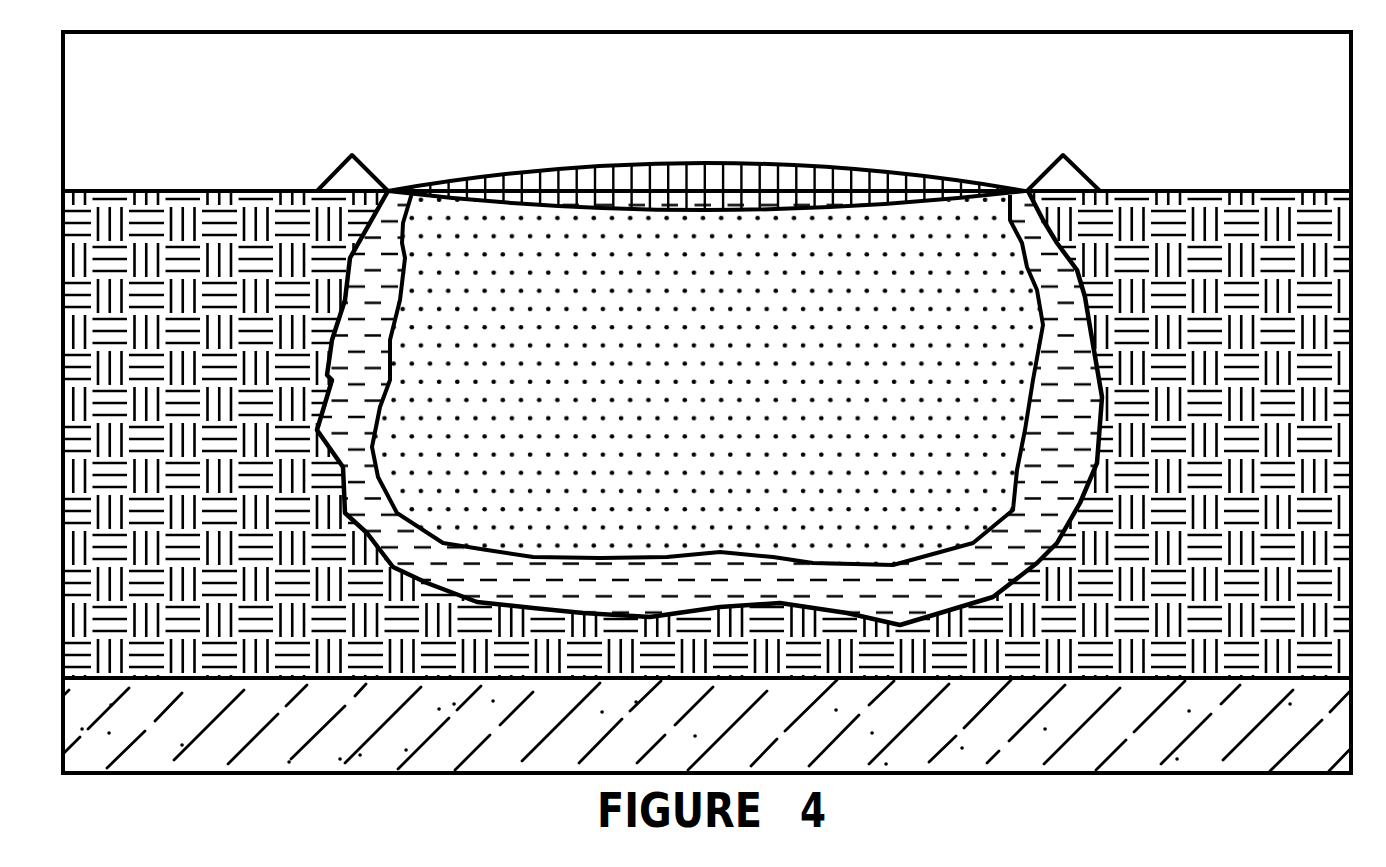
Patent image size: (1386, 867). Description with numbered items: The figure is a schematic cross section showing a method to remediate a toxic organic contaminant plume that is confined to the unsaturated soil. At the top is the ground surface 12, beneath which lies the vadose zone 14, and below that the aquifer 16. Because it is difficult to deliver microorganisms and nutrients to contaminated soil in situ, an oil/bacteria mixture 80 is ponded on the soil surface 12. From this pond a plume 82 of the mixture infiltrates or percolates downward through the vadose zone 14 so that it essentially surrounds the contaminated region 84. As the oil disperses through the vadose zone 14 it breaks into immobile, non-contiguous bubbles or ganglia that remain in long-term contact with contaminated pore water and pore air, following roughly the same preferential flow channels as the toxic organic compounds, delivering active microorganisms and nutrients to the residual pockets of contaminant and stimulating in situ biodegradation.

The ground surface 12 is at (145, 190).
The vadose zone 14 is at (187, 398).
The aquifer 16 is at (1152, 735).
The oil/bacteria mixture 80 is at (528, 172).
The plume 82 is at (1025, 263).
The contaminated region 84 is at (737, 386).